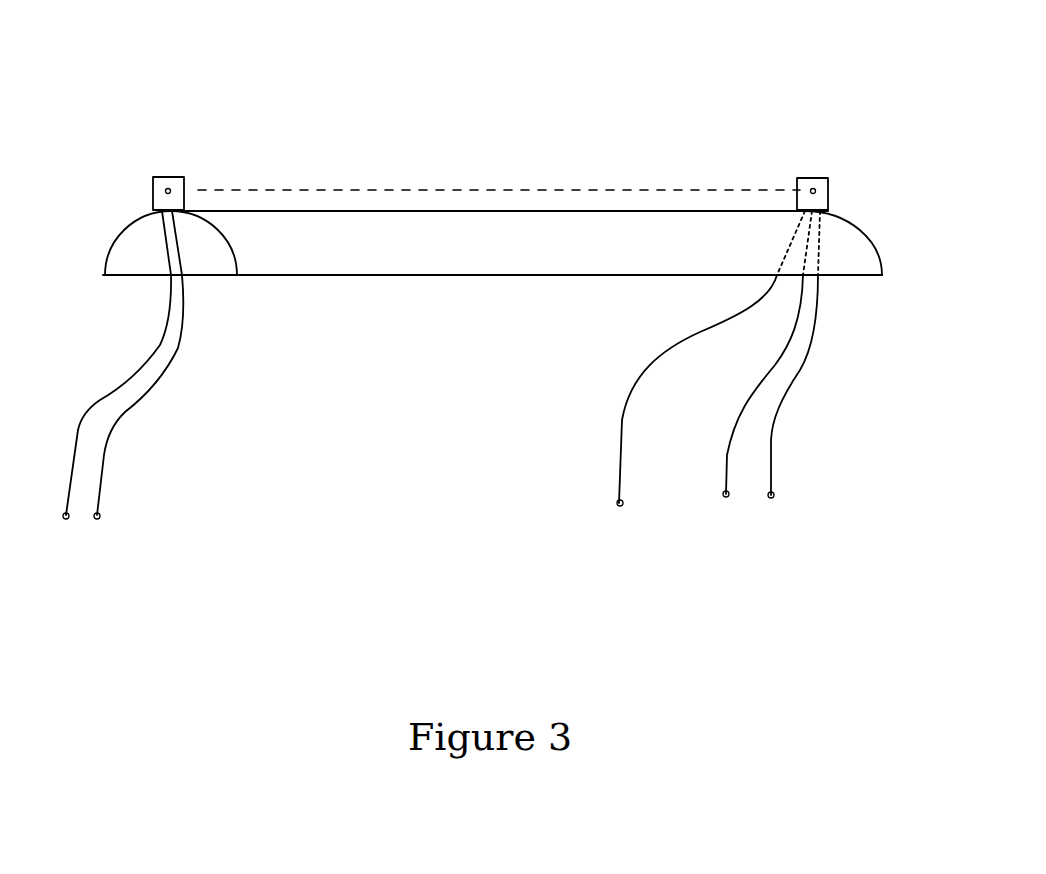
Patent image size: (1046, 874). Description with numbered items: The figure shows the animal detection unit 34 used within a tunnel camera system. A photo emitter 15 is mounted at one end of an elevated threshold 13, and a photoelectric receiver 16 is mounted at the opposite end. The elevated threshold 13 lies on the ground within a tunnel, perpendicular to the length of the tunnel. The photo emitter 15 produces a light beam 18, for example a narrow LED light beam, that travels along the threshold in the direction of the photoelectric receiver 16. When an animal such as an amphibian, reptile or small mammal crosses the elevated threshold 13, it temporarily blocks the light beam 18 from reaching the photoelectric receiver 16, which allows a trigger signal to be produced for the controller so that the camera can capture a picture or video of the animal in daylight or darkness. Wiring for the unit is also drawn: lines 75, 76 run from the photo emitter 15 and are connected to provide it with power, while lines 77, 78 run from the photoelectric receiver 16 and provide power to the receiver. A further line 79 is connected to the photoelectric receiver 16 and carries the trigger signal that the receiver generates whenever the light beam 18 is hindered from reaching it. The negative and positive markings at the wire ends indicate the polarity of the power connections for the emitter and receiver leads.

The animal detection unit 34 is at (610, 132).
The elevated threshold 13 is at (452, 276).
The light beam 18 is at (360, 190).
The photo emitter 15 is at (153, 194).
The photoelectric receiver 16 is at (828, 192).
The line 75 is at (108, 385).
The line 76 is at (118, 425).
The line 77 is at (747, 407).
The line 78 is at (800, 377).
The line 79 is at (619, 452).